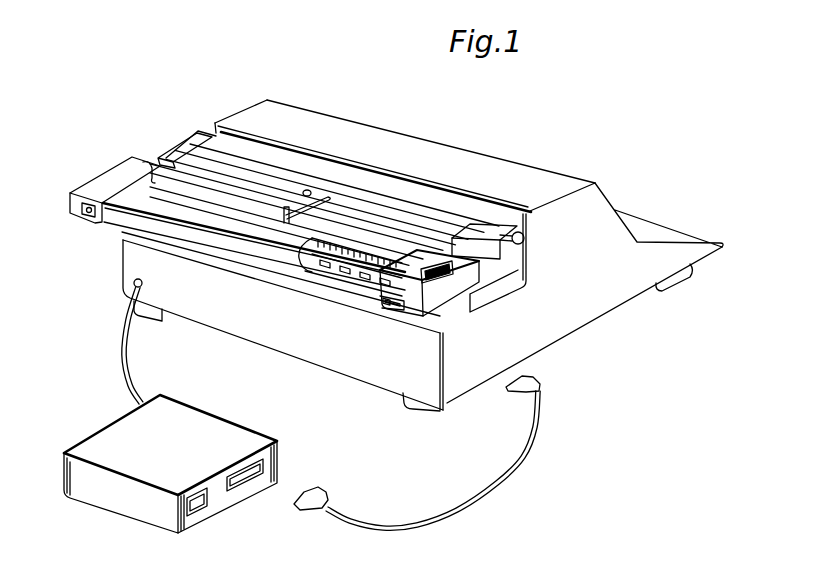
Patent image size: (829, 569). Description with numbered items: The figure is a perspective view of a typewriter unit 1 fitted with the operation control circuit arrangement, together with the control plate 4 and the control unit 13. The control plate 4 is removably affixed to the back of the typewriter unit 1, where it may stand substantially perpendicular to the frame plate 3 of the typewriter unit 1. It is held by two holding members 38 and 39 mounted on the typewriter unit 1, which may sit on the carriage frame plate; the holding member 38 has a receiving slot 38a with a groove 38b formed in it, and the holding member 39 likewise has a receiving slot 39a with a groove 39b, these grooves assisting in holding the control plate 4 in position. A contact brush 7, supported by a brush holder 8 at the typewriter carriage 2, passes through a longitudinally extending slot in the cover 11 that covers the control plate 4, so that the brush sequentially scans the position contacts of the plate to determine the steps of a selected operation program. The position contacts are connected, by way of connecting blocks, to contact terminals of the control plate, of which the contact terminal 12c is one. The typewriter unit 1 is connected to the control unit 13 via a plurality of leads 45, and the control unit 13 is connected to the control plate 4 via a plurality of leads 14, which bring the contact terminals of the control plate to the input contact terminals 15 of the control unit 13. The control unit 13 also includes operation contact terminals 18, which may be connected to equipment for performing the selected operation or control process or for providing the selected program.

The typewriter unit 1 is at (480, 371).
The typewriter carriage 2 is at (493, 226).
The frame plate 3 is at (177, 182).
The control plate 4 is at (337, 275).
The contact brush 7 is at (283, 220).
The brush holder 8 is at (310, 193).
The cover 11 is at (128, 215).
The contact terminal 12c is at (398, 312).
The control unit 13 is at (217, 424).
The leads 14 is at (534, 424).
The input contact terminals 15 is at (247, 482).
The operation contact terminals 18 is at (198, 508).
The holding member 38 is at (468, 282).
The receiving slot 38a is at (400, 305).
The groove 38b is at (386, 303).
The holding member 39 is at (107, 178).
The receiving slot 39a is at (86, 207).
The groove 39b is at (90, 218).
The leads 45 is at (130, 398).